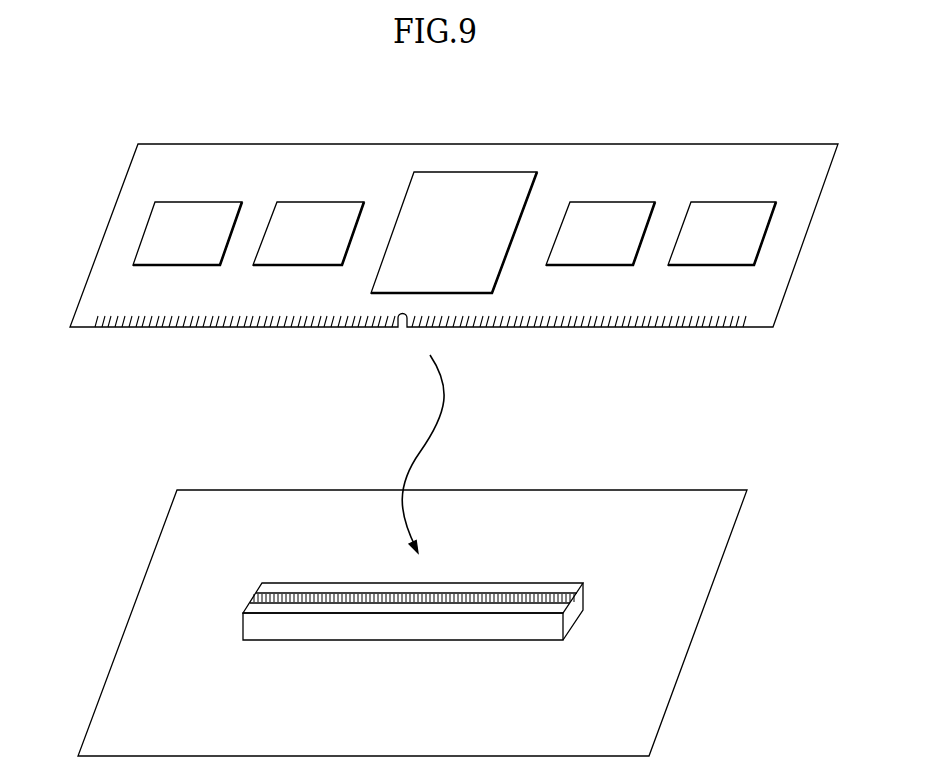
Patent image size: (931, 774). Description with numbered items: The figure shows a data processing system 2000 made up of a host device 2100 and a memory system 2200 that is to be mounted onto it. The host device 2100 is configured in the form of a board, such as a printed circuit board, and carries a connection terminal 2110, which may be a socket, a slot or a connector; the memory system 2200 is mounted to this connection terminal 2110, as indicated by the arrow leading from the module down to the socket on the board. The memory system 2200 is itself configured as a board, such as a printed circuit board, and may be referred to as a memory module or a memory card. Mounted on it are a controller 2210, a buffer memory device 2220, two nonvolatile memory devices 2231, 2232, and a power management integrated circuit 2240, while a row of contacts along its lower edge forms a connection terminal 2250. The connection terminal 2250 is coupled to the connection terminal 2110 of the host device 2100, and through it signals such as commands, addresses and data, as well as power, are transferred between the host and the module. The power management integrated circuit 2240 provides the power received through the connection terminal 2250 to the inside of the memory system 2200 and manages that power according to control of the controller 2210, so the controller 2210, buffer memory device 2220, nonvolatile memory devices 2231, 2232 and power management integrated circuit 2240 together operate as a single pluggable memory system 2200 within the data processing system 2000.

The data processing system 2000 is at (113, 102).
The memory system 2200 is at (454, 261).
The controller 2210 is at (454, 232).
The buffer memory device 2220 is at (308, 233).
The nonvolatile memory device 2231 is at (600, 233).
The nonvolatile memory device 2232 is at (722, 233).
The power management integrated circuit 2240 is at (187, 233).
The connection terminal 2250 is at (117, 328).
The host device 2100 is at (412, 623).
The connection terminal 2110 is at (580, 593).